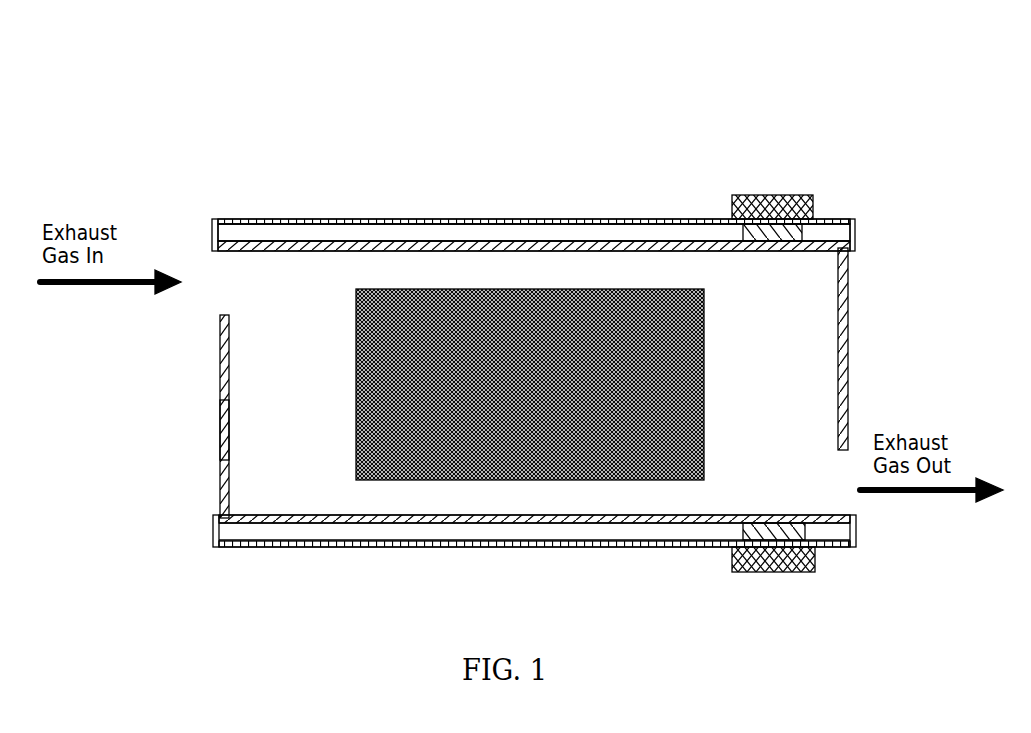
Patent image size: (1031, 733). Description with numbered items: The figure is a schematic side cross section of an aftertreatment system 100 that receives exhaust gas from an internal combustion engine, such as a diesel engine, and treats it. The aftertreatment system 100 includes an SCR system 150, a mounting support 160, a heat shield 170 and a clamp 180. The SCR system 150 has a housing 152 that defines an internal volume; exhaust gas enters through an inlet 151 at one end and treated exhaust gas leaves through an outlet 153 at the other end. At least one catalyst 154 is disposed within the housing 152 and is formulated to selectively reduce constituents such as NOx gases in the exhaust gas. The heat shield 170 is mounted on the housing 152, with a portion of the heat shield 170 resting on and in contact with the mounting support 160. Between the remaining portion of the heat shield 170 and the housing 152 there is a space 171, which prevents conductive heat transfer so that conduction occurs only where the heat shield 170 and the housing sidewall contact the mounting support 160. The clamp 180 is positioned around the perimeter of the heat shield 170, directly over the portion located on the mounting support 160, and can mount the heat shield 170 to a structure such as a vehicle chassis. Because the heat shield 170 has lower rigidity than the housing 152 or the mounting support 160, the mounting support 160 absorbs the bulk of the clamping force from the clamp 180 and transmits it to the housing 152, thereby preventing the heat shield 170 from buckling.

The aftertreatment system 100 is at (796, 66).
The SCR system 150 is at (221, 362).
The inlet 151 is at (222, 280).
The housing 152 is at (221, 429).
The outlet 153 is at (845, 490).
The catalyst 154 is at (356, 400).
The mounting support 160 is at (798, 232).
The heat shield 170 is at (350, 219).
The space 171 is at (445, 236).
The clamp 180 is at (783, 195).